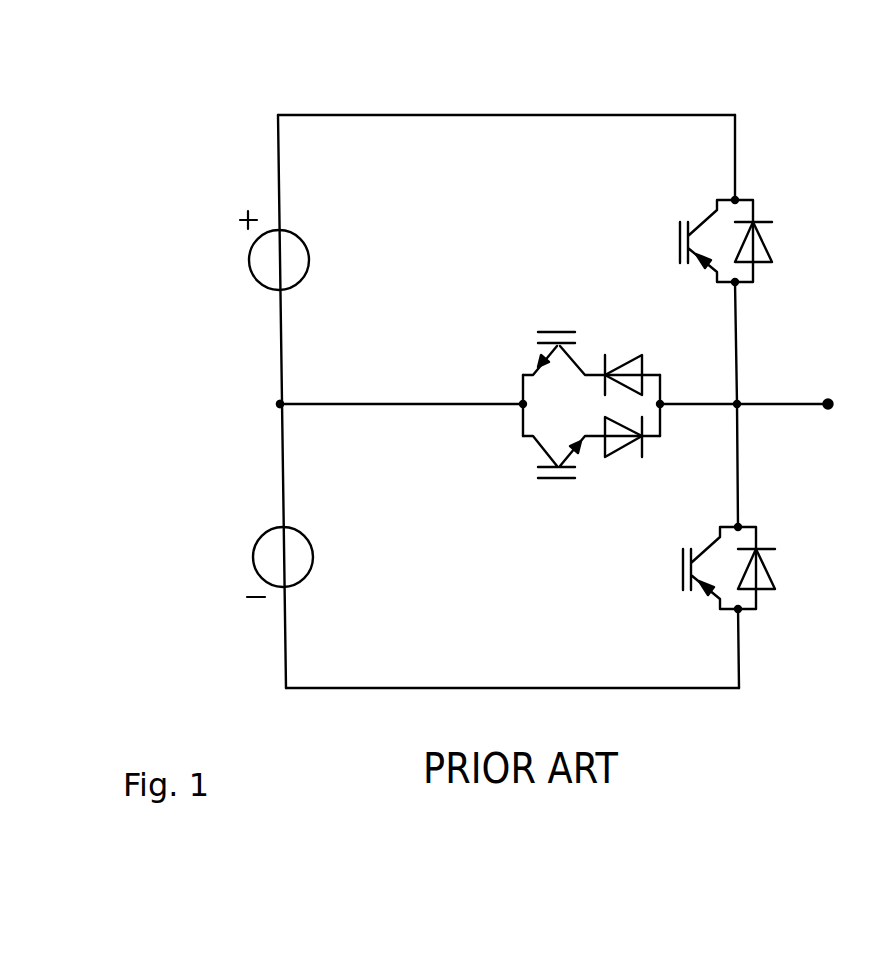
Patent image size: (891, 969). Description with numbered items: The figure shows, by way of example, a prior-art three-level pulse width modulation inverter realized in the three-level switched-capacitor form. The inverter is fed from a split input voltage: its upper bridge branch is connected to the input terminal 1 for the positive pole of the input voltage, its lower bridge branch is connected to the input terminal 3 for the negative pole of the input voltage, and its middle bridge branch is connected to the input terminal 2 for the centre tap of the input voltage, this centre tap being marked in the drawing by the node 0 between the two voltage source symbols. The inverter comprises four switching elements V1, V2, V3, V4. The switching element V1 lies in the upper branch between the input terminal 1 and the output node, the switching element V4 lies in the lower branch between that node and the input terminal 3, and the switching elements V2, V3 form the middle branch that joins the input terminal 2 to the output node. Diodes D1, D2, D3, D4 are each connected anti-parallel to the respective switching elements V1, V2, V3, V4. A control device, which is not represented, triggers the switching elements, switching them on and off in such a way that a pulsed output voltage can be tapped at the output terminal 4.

The input terminal for the positive pole of the input voltage 1 is at (268, 117).
The input terminal for the centre tap of the input voltage 2 is at (290, 395).
The input terminal for the negative pole of the input voltage 3 is at (278, 695).
The output terminal 4 is at (759, 402).
The neutral (zero) potential point 0 is at (267, 407).
The switching element V1 is at (683, 241).
The diode D1 is at (774, 241).
The switching element V2 is at (564, 335).
The diode D2 is at (632, 361).
The switching element V3 is at (564, 479).
The diode D3 is at (632, 457).
The switching element V4 is at (686, 568).
The diode D4 is at (777, 568).